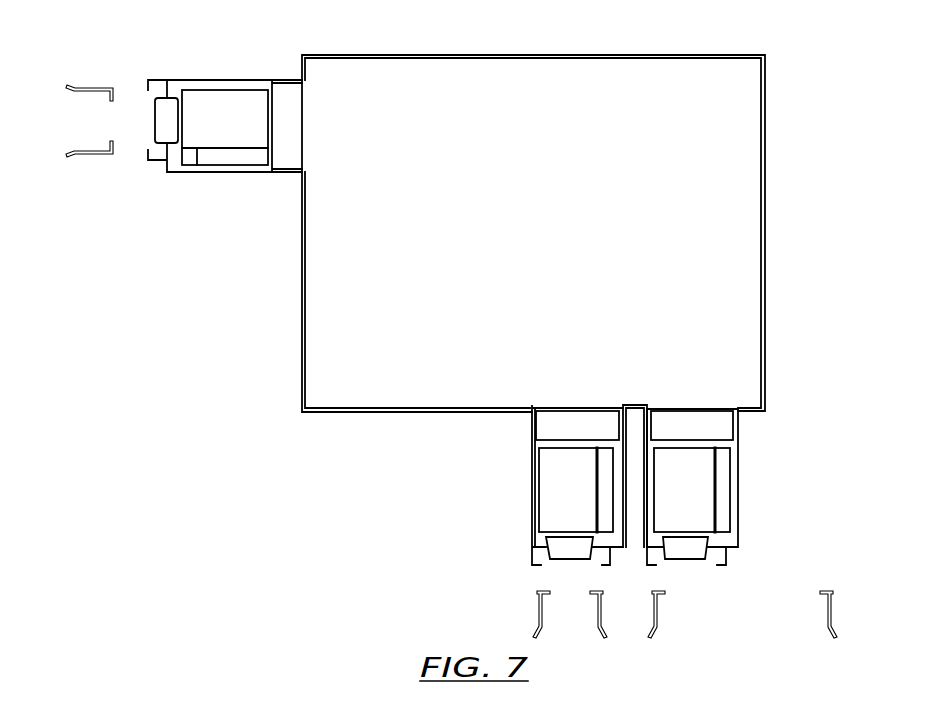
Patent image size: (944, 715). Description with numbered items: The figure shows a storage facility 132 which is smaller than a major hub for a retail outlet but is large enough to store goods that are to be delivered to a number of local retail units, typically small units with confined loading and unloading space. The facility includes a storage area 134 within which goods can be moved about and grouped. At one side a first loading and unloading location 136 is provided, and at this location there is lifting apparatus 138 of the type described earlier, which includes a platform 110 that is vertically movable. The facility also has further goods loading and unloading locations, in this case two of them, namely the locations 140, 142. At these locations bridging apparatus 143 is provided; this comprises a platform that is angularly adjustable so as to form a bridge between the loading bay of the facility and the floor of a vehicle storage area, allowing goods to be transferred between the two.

The platform 110 is at (220, 137).
The storage facility 132 is at (745, 210).
The storage area 134 is at (542, 226).
The first loading and unloading location 136 is at (298, 105).
The lifting apparatus 138 is at (237, 157).
The further goods loading and unloading location 140 is at (562, 484).
The further goods loading and unloading location 142 is at (693, 477).
The bridging apparatus 143 is at (560, 552).